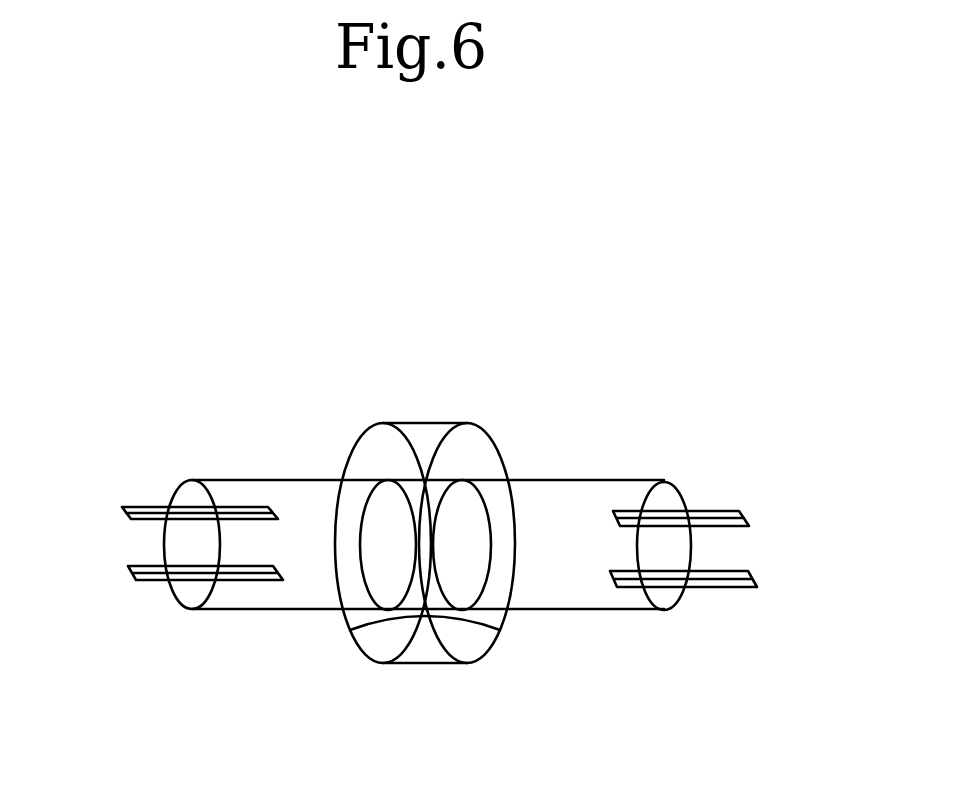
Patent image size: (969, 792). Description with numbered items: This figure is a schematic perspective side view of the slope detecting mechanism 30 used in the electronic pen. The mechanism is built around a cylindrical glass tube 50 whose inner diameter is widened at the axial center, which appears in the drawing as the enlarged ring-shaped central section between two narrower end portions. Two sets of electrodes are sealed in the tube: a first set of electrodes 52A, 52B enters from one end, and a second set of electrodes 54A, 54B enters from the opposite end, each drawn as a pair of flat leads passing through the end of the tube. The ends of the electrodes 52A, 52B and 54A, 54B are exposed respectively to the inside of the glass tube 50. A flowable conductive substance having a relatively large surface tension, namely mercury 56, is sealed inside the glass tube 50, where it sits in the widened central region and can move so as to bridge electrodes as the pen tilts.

The slope detecting mechanism 30 is at (570, 350).
The cylindrical glass tube 50 is at (445, 424).
The electrode 52A is at (147, 508).
The electrode 52B is at (150, 572).
The electrode 54A is at (715, 515).
The electrode 54B is at (717, 582).
The mercury 56 is at (428, 652).